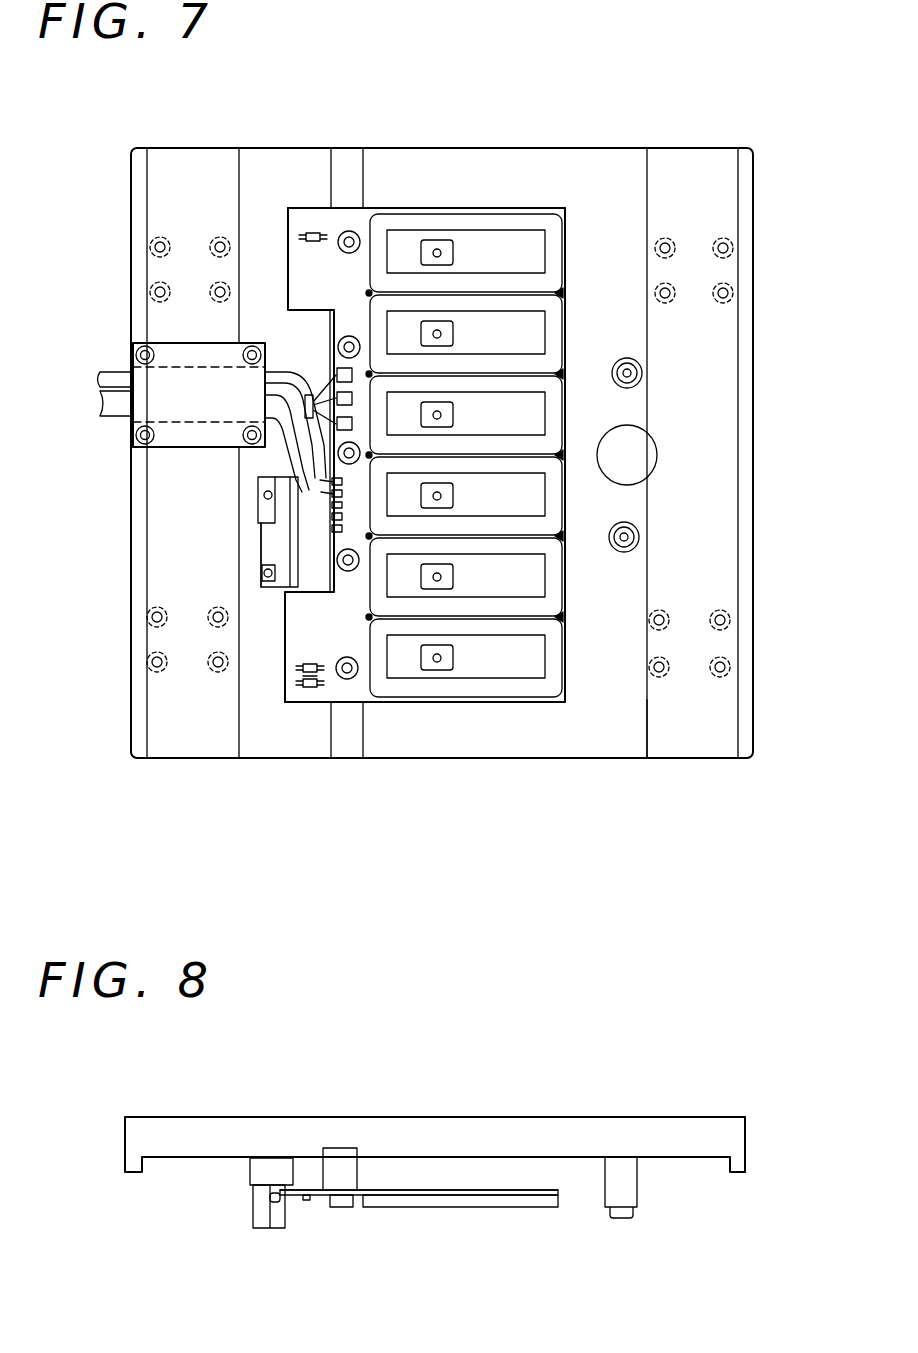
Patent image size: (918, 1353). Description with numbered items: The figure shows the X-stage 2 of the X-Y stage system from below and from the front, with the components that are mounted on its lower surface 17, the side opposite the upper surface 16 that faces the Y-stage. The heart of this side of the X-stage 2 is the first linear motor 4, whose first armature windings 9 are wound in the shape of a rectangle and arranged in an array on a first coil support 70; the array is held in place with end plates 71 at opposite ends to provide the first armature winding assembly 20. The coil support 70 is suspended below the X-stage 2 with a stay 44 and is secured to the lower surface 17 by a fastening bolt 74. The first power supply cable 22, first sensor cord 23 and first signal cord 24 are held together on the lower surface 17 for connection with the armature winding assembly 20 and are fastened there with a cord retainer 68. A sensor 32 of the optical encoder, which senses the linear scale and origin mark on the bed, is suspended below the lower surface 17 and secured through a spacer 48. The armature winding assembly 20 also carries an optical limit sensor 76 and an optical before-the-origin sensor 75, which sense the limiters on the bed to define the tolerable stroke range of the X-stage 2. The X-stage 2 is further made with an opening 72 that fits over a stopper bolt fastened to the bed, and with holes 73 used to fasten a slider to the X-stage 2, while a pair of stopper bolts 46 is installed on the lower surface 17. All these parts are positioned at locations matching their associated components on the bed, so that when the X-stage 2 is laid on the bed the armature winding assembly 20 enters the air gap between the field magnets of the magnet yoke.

In FIG. 7, the X-stage 2 is at (628, 162).
In FIG. 8, the X-stage 2 is at (650, 1130).
In FIG. 7, the first linear motor 4 is at (552, 637).
In FIG. 7, the first armature windings 9 is at (541, 305).
In FIG. 8, the first armature windings 9 is at (487, 1204).
In FIG. 8, the upper surface 16 is at (520, 1116).
In FIG. 7, the lower surface 17 is at (600, 732).
In FIG. 8, the lower surface 17 is at (690, 1160).
In FIG. 7, the first armature winding assembly 20 is at (518, 700).
In FIG. 8, the first armature winding assembly 20 is at (428, 1207).
In FIG. 7, the first power supply cable 22 is at (307, 390).
In FIG. 7, the first sensor cord 23 is at (103, 383).
In FIG. 7, the first signal cord 24 is at (287, 365).
In FIG. 7, the sensor 32 is at (280, 548).
In FIG. 8, the sensor 32 is at (257, 1217).
In FIG. 8, the stay 44 is at (340, 1160).
In FIG. 7, the stopper bolts 46 is at (641, 372).
In FIG. 8, the stopper bolts 46 is at (627, 1192).
In FIG. 7, the spacer 48 is at (257, 587).
In FIG. 8, the spacer 48 is at (270, 1163).
In FIG. 7, the cord retainer 68 is at (178, 432).
In FIG. 7, the first coil support 70 is at (302, 633).
In FIG. 8, the first coil support 70 is at (416, 1192).
In FIG. 7, the end plates 71 is at (488, 208).
In FIG. 7, the opening 72 is at (655, 455).
In FIG. 7, the holes 73 is at (153, 242).
In FIG. 7, the fastening bolt 74 is at (352, 233).
In FIG. 8, the fastening bolt 74 is at (342, 1208).
In FIG. 7, the optical before-the-origin sensor 75 is at (306, 700).
In FIG. 7, the optical limit sensor 76 is at (315, 230).